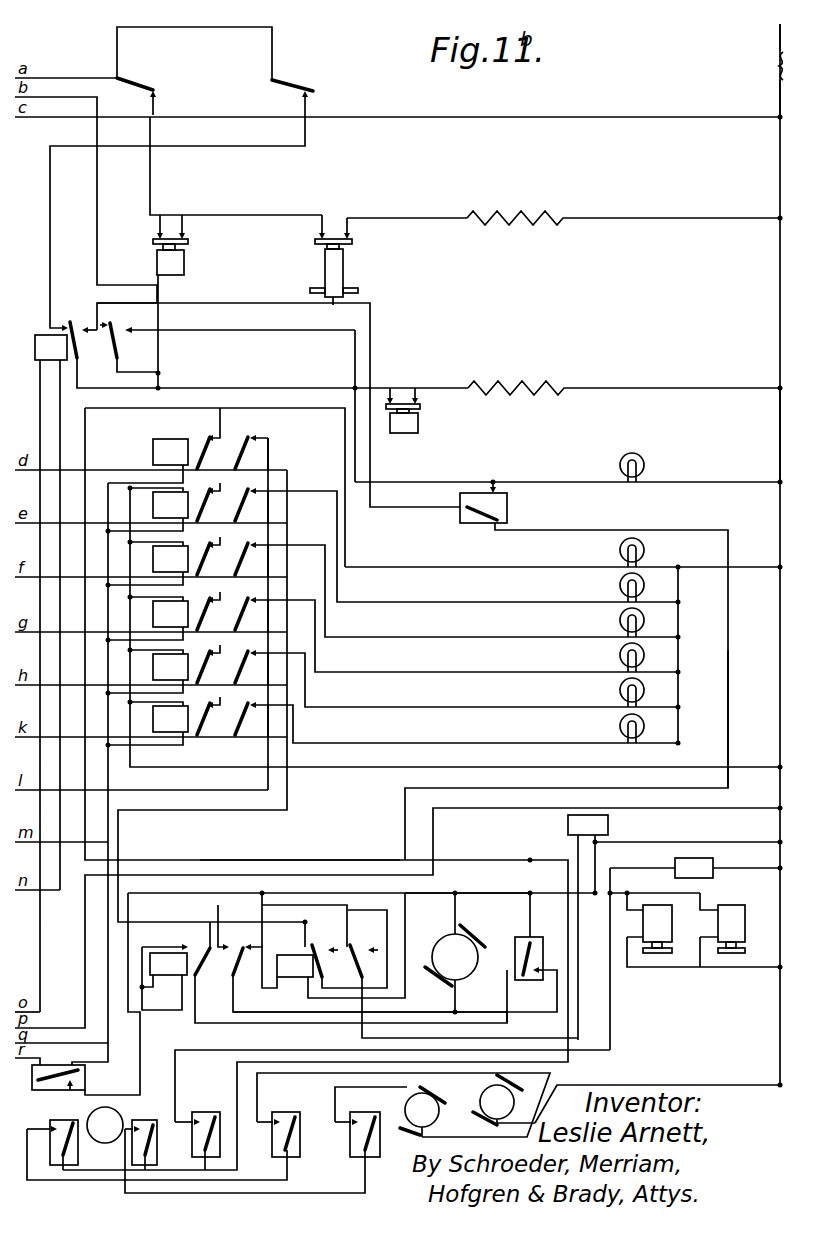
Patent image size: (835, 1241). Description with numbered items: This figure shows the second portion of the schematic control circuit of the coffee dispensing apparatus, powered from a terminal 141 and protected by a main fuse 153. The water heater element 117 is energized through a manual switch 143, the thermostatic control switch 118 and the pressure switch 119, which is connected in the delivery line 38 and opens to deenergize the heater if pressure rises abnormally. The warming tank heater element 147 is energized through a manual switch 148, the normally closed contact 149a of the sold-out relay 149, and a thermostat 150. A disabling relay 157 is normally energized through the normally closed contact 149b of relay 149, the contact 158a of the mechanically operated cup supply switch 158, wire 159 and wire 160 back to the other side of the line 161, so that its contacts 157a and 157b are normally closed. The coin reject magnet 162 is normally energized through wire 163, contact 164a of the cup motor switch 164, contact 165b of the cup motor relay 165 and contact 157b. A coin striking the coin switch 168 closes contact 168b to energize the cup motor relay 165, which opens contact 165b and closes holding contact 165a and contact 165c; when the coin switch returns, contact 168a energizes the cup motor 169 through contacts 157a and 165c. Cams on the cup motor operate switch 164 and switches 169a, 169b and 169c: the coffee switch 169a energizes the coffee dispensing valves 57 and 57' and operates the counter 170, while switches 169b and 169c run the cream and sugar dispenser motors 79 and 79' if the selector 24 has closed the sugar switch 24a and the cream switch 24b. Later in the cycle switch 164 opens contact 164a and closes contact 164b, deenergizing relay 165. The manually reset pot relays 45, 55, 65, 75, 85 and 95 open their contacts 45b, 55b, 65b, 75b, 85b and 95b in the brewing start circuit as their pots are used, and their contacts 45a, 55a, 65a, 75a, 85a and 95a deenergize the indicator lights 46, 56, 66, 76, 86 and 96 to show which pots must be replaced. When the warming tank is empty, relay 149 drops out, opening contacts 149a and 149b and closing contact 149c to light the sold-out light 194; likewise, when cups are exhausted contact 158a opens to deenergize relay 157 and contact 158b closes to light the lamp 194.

The manual switch 143 is at (136, 83).
The manual switch 148 is at (293, 82).
The terminal 141 is at (778, 37).
The main fuse 153 is at (752, 94).
The heater element 117 is at (536, 215).
The thermostatic control switch 118 is at (184, 266).
The pressure switch 119 is at (343, 268).
The delivery line 38 is at (311, 290).
The sold-out relay 149 is at (41, 335).
The normally closed contact 149a is at (68, 321).
The normally closed contact 149b is at (127, 305).
The contact 149c is at (129, 347).
The heater element 147 is at (526, 385).
The thermostat 150 is at (419, 424).
The line 161 is at (780, 418).
The sold-out light 194 is at (635, 453).
The cup supply switch 158 is at (464, 521).
The contact 158a is at (492, 526).
The contact 158b is at (497, 493).
The pot relay 95 is at (172, 444).
The relay contact 95a is at (214, 438).
The contact 95b is at (244, 437).
The pot relay 85 is at (147, 510).
The relay contact 85a is at (214, 502).
The contact 85b is at (458, 546).
The pot relay 75 is at (147, 564).
The relay contact 75a is at (214, 556).
The contact 75b is at (458, 591).
The pot relay 65 is at (147, 619).
The relay contact 65a is at (214, 611).
The contact 65b is at (458, 636).
The pot relay 55 is at (147, 672).
The relay contact 55a is at (214, 664).
The contact 55b is at (458, 680).
The pot relay 45 is at (147, 724).
The contact 45a is at (214, 716).
The contact 45b is at (458, 724).
The indicator light 96 is at (620, 550).
The indicator light 86 is at (620, 585).
The indicator light 76 is at (620, 620).
The indicator light 66 is at (620, 655).
The indicator light 56 is at (620, 690).
The indicator light 46 is at (620, 726).
The wire 159 is at (729, 706).
The wire 163 is at (268, 856).
The coin reject magnet 162 is at (608, 827).
The counter 170 is at (706, 866).
The wire 160 is at (440, 895).
The coffee dispensing valve 57 is at (695, 930).
The coffee dispensing valve 57' is at (737, 930).
The cup motor relay 165 is at (170, 966).
The holding contact 165a is at (161, 938).
The contact 165b is at (208, 945).
The contact 165c is at (238, 951).
The disabling relay 157 is at (290, 968).
The contact 157a is at (312, 946).
The contact 157b is at (351, 946).
The cup motor 169 is at (440, 938).
The cup motor switch 164 is at (522, 937).
The contact 164a is at (511, 972).
The contact 164b is at (545, 968).
The coin switch 168 is at (38, 1090).
The contact 168a is at (78, 1071).
The contact 168b is at (57, 1122).
The selector 24 is at (112, 1118).
The switch 24a is at (69, 1143).
The switch 24b is at (150, 1141).
The coffee switch 169a is at (207, 1116).
The switch 169b is at (288, 1116).
The switch 169c is at (368, 1116).
The cream dispenser motor 79 is at (432, 1112).
The sugar dispenser motor 79' is at (487, 1100).